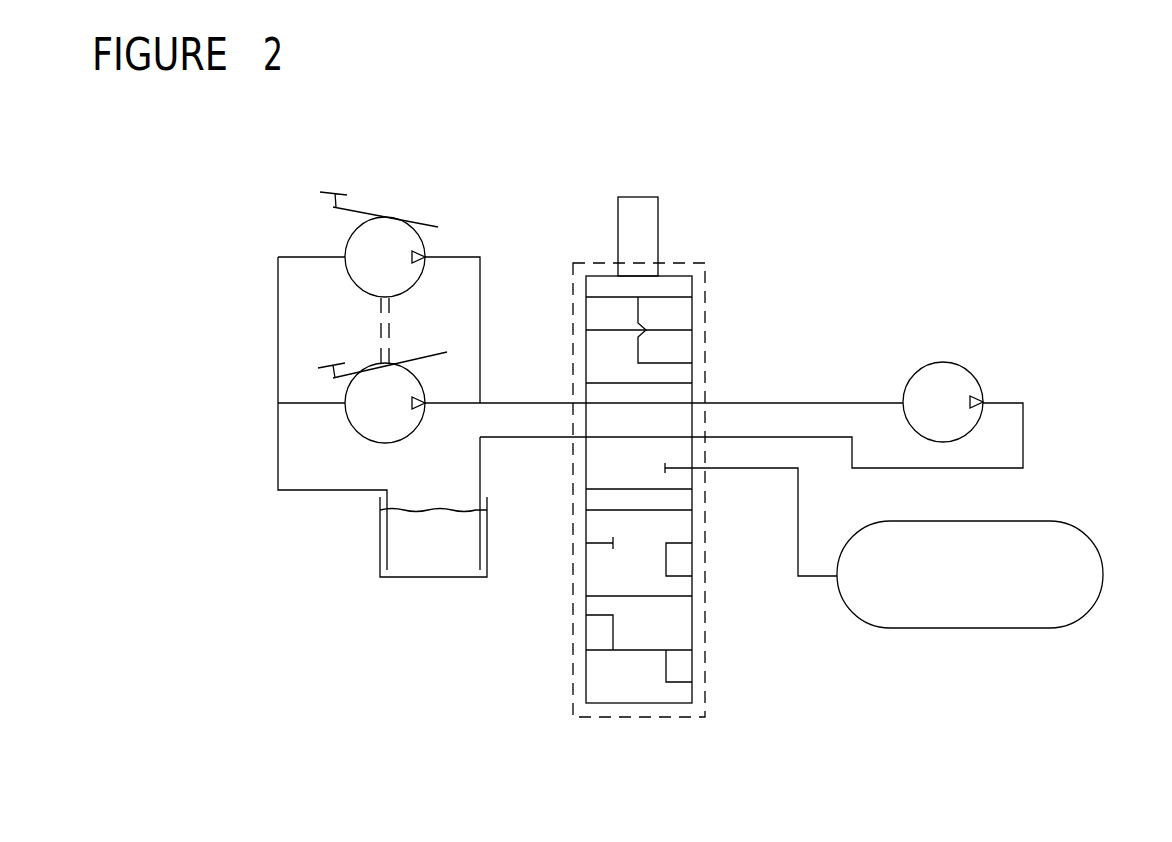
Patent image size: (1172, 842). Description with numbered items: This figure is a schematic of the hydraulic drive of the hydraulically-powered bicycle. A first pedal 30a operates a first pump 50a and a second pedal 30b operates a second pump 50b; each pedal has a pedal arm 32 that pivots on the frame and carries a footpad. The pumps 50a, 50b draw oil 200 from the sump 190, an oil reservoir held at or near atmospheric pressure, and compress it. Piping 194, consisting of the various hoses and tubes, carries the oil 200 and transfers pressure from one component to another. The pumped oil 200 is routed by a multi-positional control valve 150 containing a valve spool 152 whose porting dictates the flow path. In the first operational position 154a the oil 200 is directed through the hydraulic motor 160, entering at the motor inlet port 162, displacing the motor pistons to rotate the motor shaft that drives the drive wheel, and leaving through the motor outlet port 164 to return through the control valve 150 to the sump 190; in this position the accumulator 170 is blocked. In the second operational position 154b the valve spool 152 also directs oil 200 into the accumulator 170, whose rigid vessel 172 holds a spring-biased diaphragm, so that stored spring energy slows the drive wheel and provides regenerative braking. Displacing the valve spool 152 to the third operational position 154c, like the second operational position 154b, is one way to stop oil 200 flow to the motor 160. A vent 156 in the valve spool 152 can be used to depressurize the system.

The first pedal 30a is at (412, 182).
The second pedal 30b is at (260, 322).
The pedal arm 32 is at (425, 221).
The first pump 50a is at (297, 218).
The second pump 50b is at (258, 452).
The multi-positional control valve 150 is at (673, 489).
The valve spool 152 is at (660, 233).
The first operational position 154a is at (680, 393).
The second operational position 154b is at (701, 609).
The third operational position 154c is at (680, 313).
The vent 156 is at (607, 683).
The hydraulic motor 160 is at (957, 352).
The motor inlet port 162 is at (903, 400).
The motor outlet port 164 is at (980, 330).
The accumulator 170 is at (992, 634).
The rigid vessel 172 is at (1002, 663).
The sump 190 is at (435, 577).
The piping 194 is at (278, 392).
The oil 200 is at (442, 550).